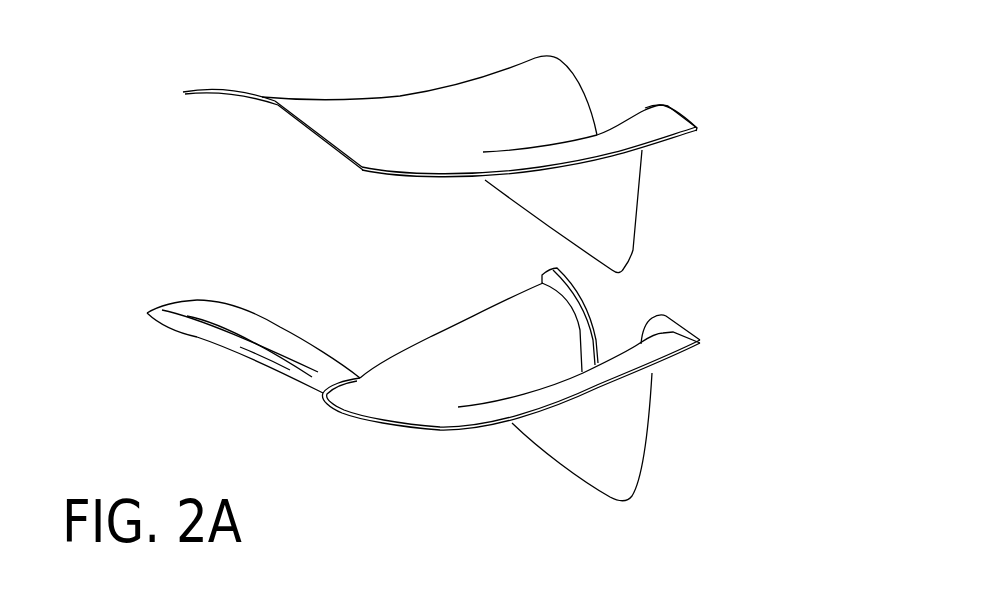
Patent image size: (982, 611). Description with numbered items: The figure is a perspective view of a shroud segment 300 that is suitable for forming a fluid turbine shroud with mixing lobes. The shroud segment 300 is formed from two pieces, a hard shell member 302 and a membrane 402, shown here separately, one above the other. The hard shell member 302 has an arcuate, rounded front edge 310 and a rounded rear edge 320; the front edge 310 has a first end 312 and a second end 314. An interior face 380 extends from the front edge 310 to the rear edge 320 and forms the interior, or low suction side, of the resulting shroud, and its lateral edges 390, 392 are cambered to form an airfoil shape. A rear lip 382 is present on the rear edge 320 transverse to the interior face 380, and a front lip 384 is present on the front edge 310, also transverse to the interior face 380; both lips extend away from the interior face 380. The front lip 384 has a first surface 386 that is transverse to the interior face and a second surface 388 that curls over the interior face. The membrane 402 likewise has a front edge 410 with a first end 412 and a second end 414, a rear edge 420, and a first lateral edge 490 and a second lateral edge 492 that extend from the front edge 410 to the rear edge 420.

The shroud segment 300 is at (731, 231).
The hard shell member 302 is at (387, 383).
The front edge 310 is at (212, 333).
The first end 312 is at (322, 393).
The second end 314 is at (147, 312).
The rear edge 320 is at (582, 302).
The interior face 380 is at (627, 452).
The rear lip 382 is at (693, 330).
The front lip 384 is at (163, 323).
The first surface 386 is at (268, 360).
The second surface 388 is at (252, 318).
The lateral edge 390 is at (447, 432).
The lateral edge 392 is at (432, 342).
The membrane 402 is at (352, 113).
The front edge 410 is at (267, 104).
The first end 412 is at (360, 170).
The second end 414 is at (183, 93).
The rear edge 420 is at (683, 113).
The first lateral edge 490 is at (455, 178).
The second lateral edge 492 is at (438, 90).